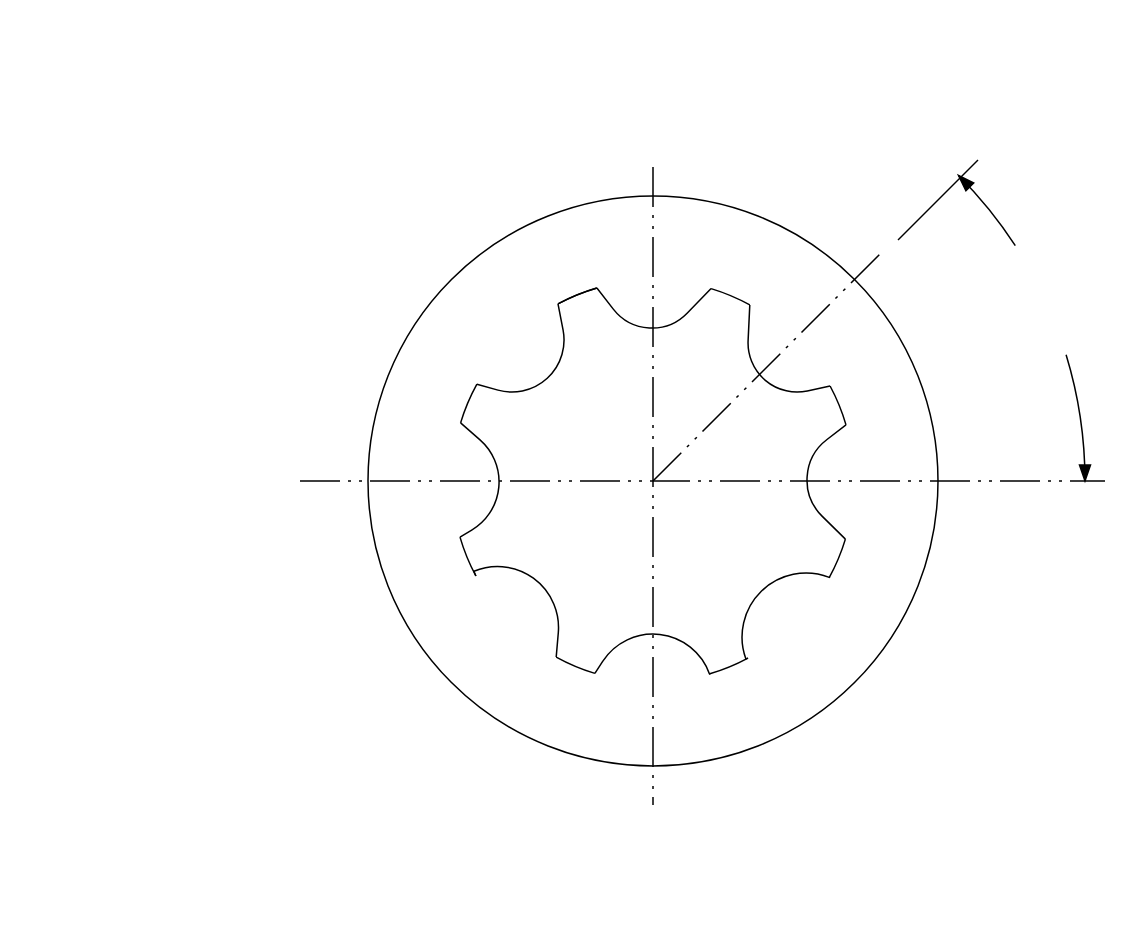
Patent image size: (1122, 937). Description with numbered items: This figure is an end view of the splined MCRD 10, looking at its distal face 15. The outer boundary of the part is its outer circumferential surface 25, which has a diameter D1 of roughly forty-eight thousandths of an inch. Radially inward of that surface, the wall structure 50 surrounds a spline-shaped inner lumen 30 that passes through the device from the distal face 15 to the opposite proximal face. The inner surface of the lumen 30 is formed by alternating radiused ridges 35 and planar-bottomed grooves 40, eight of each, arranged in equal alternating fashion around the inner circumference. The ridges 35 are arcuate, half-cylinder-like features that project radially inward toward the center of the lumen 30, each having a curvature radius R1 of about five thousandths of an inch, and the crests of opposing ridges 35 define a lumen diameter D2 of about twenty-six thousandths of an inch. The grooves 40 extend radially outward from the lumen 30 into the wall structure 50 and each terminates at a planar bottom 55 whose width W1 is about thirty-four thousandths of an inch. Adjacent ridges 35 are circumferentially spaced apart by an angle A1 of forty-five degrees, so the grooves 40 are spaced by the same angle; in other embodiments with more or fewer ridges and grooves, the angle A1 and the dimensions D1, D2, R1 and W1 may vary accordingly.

The MCRD 10 is at (175, 145).
The distal face 15 is at (457, 340).
The outer circumferential surface 25 is at (767, 737).
The spline-shaped inner lumen 30 is at (557, 553).
The radiused ridges 35 is at (548, 484).
The planar-bottomed grooves 40 is at (461, 425).
The wall structure 50 is at (453, 603).
The planar bottom 55 is at (563, 290).
The width of planar bottom W1 is at (581, 294).
The curvature radius of radiused ridge R1 is at (745, 365).
The diameter of outer circumferential surface D1 is at (815, 245).
The diameter of lumen between opposing ridge crests D2 is at (795, 544).
The angle between adjacent radiused ridges A1 is at (994, 320).